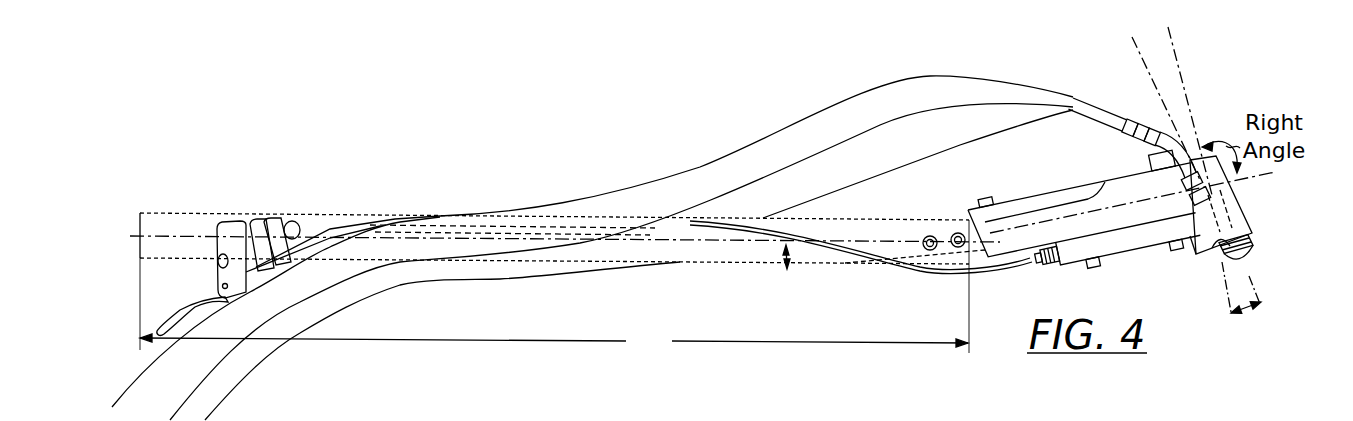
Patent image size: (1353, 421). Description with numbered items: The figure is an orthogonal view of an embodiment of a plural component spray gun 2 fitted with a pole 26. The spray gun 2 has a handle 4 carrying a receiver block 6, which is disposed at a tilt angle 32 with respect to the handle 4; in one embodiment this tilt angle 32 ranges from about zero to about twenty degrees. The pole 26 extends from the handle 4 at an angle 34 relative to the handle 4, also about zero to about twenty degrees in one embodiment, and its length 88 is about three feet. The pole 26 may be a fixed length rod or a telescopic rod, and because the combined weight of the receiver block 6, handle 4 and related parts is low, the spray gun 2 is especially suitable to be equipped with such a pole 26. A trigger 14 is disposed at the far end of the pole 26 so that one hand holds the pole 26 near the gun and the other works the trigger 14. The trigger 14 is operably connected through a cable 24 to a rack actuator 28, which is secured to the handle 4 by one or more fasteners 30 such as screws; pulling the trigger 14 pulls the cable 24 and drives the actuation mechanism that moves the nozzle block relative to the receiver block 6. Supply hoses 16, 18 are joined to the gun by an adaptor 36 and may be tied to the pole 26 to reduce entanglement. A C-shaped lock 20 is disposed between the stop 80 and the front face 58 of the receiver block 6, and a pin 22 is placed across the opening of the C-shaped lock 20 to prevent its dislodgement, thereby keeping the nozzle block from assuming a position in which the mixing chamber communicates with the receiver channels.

The spray gun 2 is at (1119, 149).
The handle 4 is at (1072, 184).
The receiver block 6 is at (1230, 194).
The trigger 14 is at (186, 302).
The hose 16 is at (820, 113).
The hose 18 is at (932, 149).
The C-shaped lock 20 is at (1250, 237).
The pin 22 is at (1262, 240).
The cable 24 is at (942, 272).
The pole 26 is at (672, 266).
The rack actuator 28 is at (1133, 254).
The fasteners 30 is at (1091, 269).
The tilt angle 32 is at (1245, 304).
The angle 34 is at (782, 262).
The adaptor 36 is at (1107, 109).
The front face 58 is at (1195, 241).
The stop 80 is at (1250, 258).
The length 88 is at (633, 355).